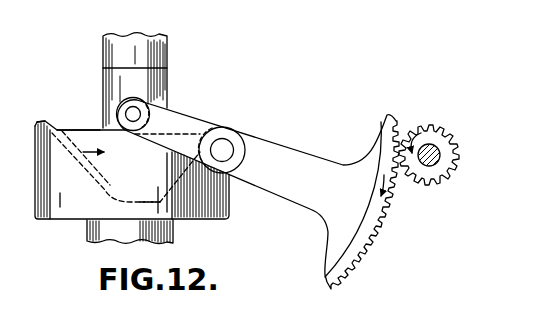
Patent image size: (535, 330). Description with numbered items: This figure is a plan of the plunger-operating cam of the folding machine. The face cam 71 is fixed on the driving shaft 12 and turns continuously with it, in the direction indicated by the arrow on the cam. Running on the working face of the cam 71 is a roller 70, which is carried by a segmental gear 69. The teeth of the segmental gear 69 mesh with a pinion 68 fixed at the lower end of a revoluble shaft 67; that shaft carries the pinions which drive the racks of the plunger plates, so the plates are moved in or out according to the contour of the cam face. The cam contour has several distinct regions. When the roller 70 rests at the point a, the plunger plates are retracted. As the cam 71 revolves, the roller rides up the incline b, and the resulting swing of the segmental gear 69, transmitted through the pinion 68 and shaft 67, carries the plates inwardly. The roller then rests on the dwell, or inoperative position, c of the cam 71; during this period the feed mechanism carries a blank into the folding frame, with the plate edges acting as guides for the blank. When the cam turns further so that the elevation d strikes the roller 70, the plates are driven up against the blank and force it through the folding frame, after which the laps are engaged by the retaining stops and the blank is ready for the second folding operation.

The driving shaft 12 is at (168, 56).
The face cam 71 is at (132, 159).
The roller 70 is at (150, 117).
The segmental gear 69 is at (258, 194).
The pinion 68 is at (443, 171).
The revoluble shaft 67 is at (437, 152).
The point a of the cam a is at (160, 202).
The incline b of the cam b is at (211, 136).
The dwell c of the cam c is at (86, 129).
The elevation d of the cam d is at (40, 121).